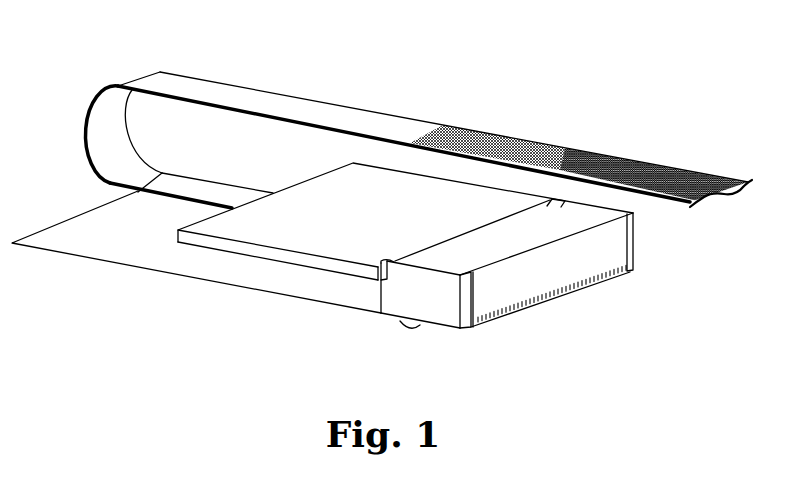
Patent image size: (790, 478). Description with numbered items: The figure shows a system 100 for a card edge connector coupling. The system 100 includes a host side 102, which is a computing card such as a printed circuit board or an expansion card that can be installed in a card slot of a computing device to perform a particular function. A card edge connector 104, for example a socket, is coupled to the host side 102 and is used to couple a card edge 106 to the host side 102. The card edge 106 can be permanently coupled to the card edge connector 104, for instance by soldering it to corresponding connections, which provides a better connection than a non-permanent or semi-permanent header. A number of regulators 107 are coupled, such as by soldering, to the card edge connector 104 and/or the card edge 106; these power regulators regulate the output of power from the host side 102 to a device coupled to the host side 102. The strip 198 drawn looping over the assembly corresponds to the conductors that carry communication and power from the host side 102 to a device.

The system 100 is at (530, 52).
The host side 102 is at (158, 274).
The card edge connector 104 is at (433, 314).
The card edge 106 is at (235, 246).
The regulators 107 is at (392, 263).
The flexible circuit strip 198 is at (302, 108).